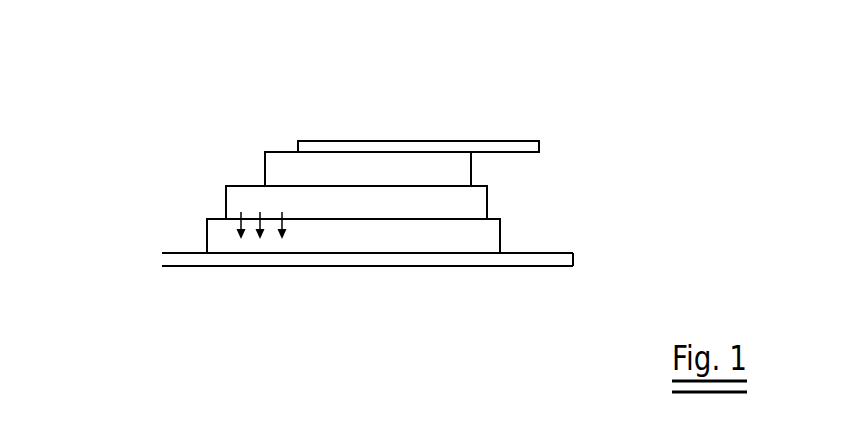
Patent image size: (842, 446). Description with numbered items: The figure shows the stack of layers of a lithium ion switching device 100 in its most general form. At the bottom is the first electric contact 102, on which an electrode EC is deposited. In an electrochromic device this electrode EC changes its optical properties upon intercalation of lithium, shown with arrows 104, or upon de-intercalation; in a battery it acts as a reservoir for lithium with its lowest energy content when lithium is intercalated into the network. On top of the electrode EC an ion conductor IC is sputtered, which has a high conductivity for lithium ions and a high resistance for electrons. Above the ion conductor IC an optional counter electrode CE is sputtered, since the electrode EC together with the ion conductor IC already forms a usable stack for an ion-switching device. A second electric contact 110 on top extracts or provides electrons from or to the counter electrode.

The lithium ion switching device 100 is at (186, 111).
The first electric contact 102 is at (345, 284).
The arrows 104 is at (236, 216).
The second electric contact 110 is at (440, 112).